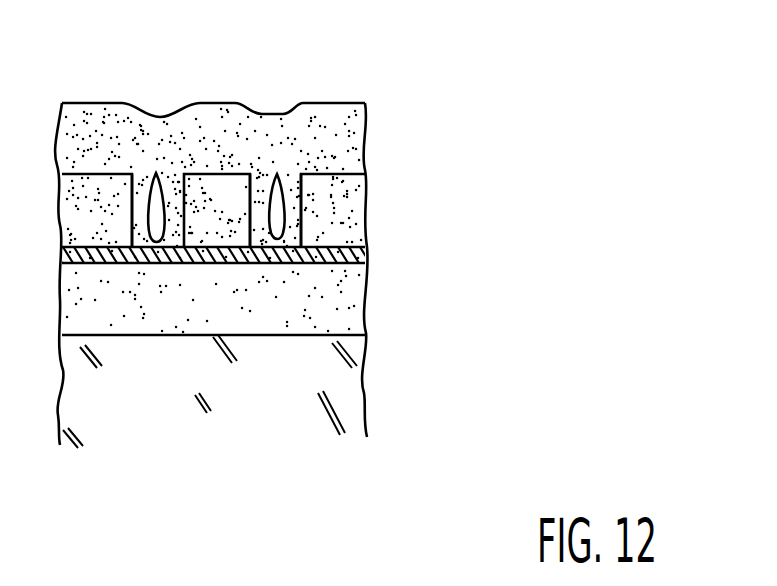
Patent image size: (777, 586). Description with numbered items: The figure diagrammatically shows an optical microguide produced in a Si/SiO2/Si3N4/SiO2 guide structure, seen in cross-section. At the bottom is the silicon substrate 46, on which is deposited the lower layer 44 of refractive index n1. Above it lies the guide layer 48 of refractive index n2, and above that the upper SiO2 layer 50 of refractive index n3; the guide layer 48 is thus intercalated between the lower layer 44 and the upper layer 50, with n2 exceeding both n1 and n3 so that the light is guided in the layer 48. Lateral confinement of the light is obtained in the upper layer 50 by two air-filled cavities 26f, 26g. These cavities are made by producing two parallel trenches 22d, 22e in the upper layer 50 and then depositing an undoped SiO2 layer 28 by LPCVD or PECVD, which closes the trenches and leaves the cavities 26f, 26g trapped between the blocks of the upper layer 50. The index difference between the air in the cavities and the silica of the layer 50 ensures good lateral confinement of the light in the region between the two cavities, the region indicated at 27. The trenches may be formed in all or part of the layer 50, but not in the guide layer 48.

The undoped SiO2 layer 28 is at (338, 144).
The upper layer 50 is at (342, 212).
The guide layer 48 is at (368, 258).
The lower layer 44 is at (347, 315).
The substrate 46 is at (348, 385).
The trench 22d is at (133, 188).
The trench 22e is at (302, 187).
The wall between apertures 27 is at (273, 180).
The air-filled cavity 26f is at (165, 237).
The air-filled cavity 26g is at (280, 240).